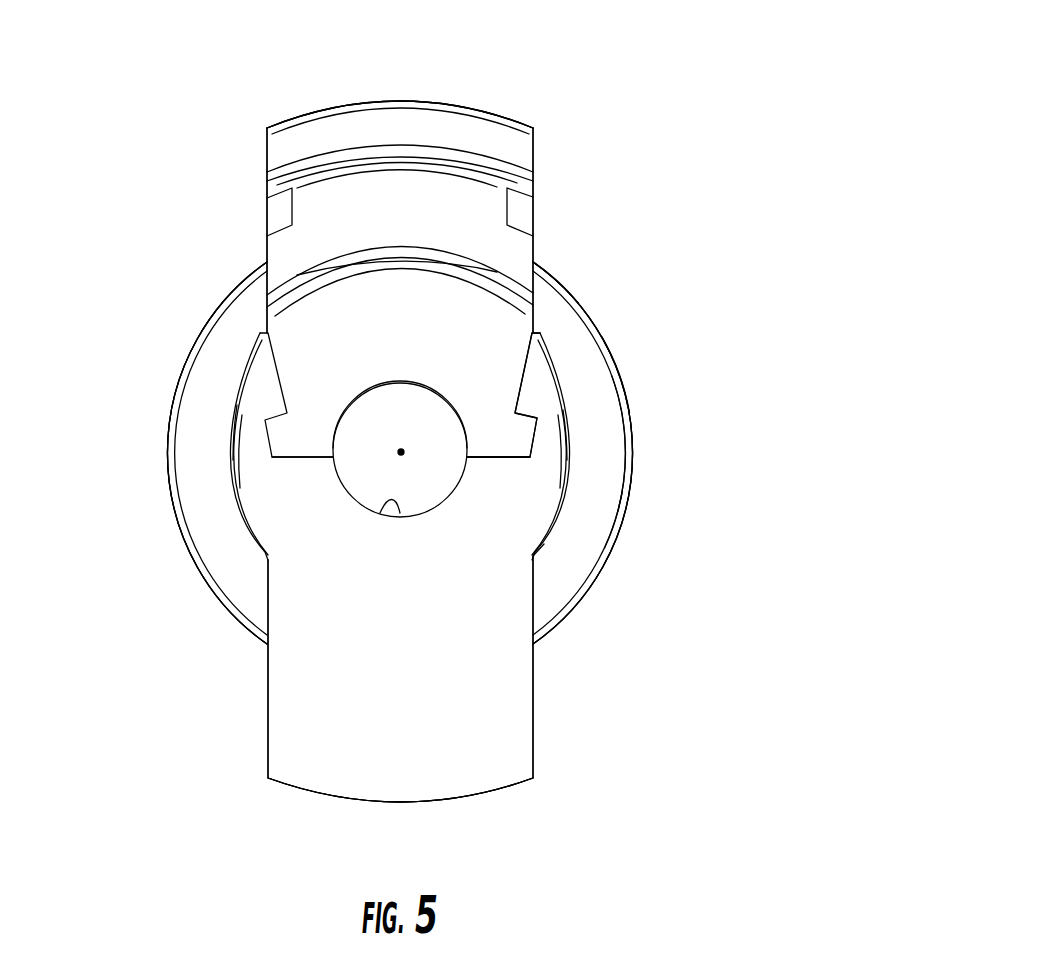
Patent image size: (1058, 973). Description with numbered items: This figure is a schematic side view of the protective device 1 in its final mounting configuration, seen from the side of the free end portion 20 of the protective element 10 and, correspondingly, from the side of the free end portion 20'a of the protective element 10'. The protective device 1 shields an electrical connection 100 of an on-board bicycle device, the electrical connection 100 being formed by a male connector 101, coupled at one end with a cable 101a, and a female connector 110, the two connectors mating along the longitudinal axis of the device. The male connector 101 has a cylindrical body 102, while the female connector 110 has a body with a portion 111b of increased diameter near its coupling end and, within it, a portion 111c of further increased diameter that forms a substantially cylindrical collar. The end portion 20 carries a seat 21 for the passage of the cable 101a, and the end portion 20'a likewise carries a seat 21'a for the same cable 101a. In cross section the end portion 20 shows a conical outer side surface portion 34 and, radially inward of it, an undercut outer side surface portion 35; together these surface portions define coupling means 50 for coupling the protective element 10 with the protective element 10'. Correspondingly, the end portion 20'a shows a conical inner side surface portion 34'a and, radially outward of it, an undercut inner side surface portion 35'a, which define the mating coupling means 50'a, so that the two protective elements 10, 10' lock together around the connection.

The protective device 1 is at (673, 90).
The protective element 10 is at (454, 228).
The protective element 10' is at (459, 596).
The free end portion 20 is at (339, 217).
The free end portion 20'a is at (480, 673).
The seat 21 is at (489, 328).
The seat 21'a is at (275, 589).
The conical outer side surface portion 34 is at (259, 345).
The conical inner side surface portion 34'a is at (588, 408).
The undercut outer side surface portion 35 is at (243, 427).
The undercut inner side surface portion 35'a is at (567, 506).
The coupling means 50 is at (163, 480).
The coupling means 50'a is at (647, 504).
The electrical connection 100 is at (140, 425).
The male connector 101 is at (577, 480).
The cable 101a is at (532, 290).
The cylindrical body 102 is at (567, 450).
The female connector 110 is at (627, 306).
The portion 111b is at (593, 415).
The portion 111c is at (620, 370).